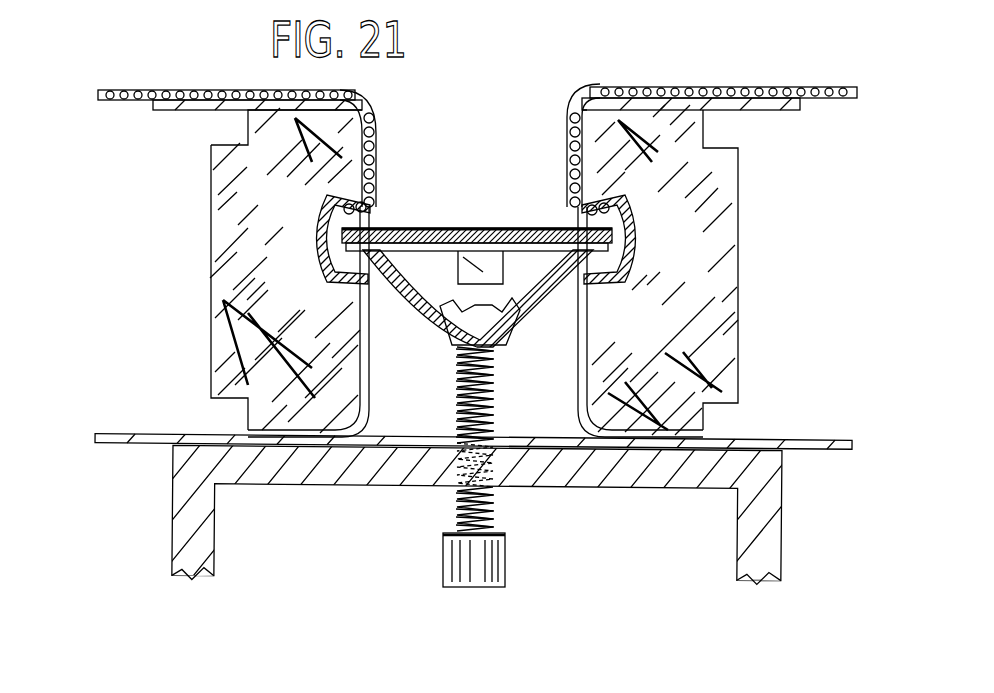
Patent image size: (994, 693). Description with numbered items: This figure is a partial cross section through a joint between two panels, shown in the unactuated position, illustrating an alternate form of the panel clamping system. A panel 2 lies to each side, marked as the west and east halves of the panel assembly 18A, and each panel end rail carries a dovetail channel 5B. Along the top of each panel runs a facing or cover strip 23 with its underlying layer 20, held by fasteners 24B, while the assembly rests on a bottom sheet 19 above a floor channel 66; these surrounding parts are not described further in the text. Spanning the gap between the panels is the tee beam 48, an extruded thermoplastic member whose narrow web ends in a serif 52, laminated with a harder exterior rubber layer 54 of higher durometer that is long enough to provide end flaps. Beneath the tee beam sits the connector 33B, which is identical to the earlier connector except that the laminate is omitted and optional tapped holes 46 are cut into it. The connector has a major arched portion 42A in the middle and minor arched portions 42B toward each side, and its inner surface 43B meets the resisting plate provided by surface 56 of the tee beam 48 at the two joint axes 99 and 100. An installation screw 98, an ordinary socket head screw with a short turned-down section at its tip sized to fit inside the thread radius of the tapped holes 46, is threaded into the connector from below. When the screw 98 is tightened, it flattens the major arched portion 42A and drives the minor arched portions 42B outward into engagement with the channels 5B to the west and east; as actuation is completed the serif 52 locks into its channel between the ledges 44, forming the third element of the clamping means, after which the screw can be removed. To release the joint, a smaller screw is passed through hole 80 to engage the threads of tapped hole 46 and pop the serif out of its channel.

The panel 2 is at (212, 242).
The dovetail channel 5B is at (324, 238).
The panel assembly 18A is at (180, 302).
The floor sheet 19 is at (113, 447).
The facing layer 20 is at (170, 105).
The top cover strip 23 is at (222, 92).
The cover strip fasteners 24B is at (782, 95).
The connector 33B is at (548, 297).
The major arched portion 42A is at (445, 315).
The minor arched portions 42B is at (400, 285).
The inner surface 43B is at (342, 312).
The ledges 44 is at (492, 345).
The tapped holes 46 is at (481, 342).
The tee beam 48 is at (478, 230).
The serif 52 is at (420, 245).
The exterior rubber layer 54 is at (550, 232).
The surface 56 is at (504, 270).
The floor channel 66 is at (208, 522).
The hole 80 is at (430, 485).
The installation screw 98 is at (482, 580).
The joint axis 99 is at (316, 274).
The joint axis 100 is at (636, 258).